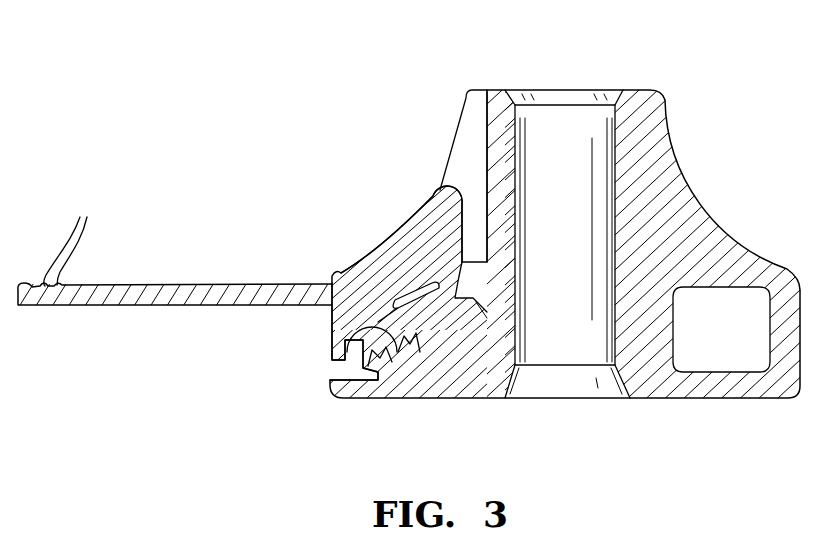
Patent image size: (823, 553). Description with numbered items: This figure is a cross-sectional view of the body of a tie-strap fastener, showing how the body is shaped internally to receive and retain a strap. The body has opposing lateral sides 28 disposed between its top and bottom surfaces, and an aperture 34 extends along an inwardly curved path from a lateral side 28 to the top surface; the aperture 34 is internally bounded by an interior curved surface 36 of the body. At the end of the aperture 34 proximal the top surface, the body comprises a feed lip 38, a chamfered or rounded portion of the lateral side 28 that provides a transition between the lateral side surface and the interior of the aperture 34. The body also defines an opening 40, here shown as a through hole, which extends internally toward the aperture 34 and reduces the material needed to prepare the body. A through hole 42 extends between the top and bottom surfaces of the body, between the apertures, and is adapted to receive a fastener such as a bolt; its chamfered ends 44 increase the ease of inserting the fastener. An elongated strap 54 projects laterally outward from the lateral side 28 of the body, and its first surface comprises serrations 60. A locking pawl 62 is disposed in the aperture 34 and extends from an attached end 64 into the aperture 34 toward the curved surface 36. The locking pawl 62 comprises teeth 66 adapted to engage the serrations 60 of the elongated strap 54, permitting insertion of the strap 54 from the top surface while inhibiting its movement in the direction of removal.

The lateral sides 28 is at (330, 308).
The apertures 34 is at (477, 108).
The interior curved surfaces 36 is at (487, 152).
The feed lip 38 is at (445, 186).
The opening 40 is at (767, 345).
The through hole 42 is at (557, 118).
The chamfered ends 44 is at (600, 90).
The elongated strap 54 is at (200, 284).
The serrations 60 is at (69, 238).
The locking pawl 62 is at (333, 327).
The attached end 64 is at (442, 302).
The teeth 66 is at (409, 343).